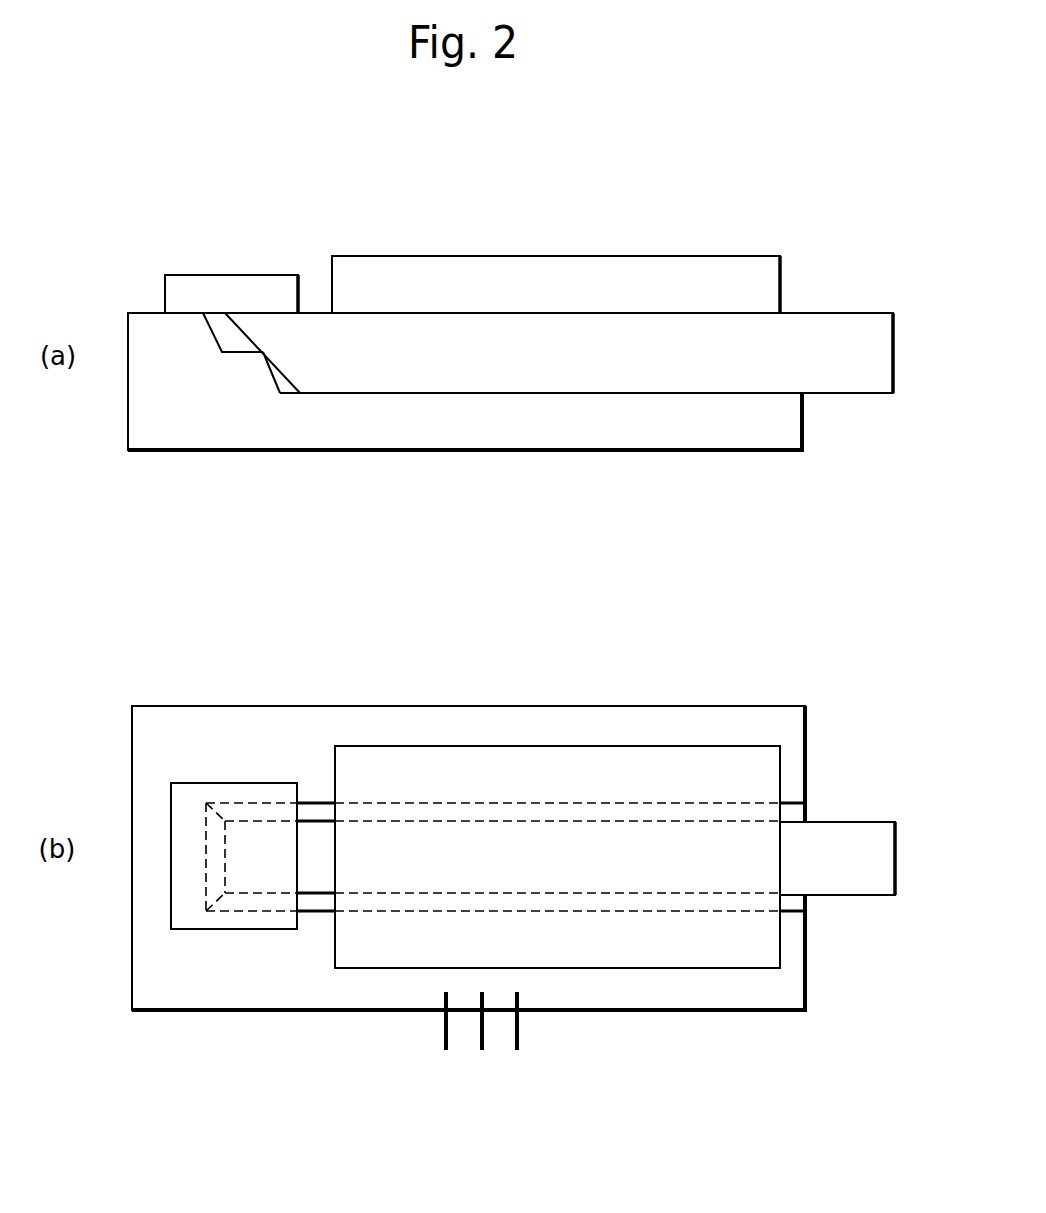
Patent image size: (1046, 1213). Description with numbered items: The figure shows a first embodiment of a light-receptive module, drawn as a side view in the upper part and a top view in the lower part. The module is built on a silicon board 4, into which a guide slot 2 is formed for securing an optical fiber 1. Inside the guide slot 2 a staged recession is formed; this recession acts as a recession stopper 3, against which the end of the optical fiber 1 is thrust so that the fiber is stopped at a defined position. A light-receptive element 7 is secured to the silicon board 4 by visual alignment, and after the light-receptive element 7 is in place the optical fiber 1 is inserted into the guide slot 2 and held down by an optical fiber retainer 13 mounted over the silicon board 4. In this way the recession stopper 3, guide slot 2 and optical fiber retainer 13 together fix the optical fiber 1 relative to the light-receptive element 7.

The optical fiber 1 is at (845, 322).
The guide slot 2 is at (317, 911).
The recession stopper 3 is at (260, 357).
The silicon board 4 is at (197, 725).
The light-receptive element 7 is at (222, 293).
The optical fiber retainer 13 is at (537, 265).